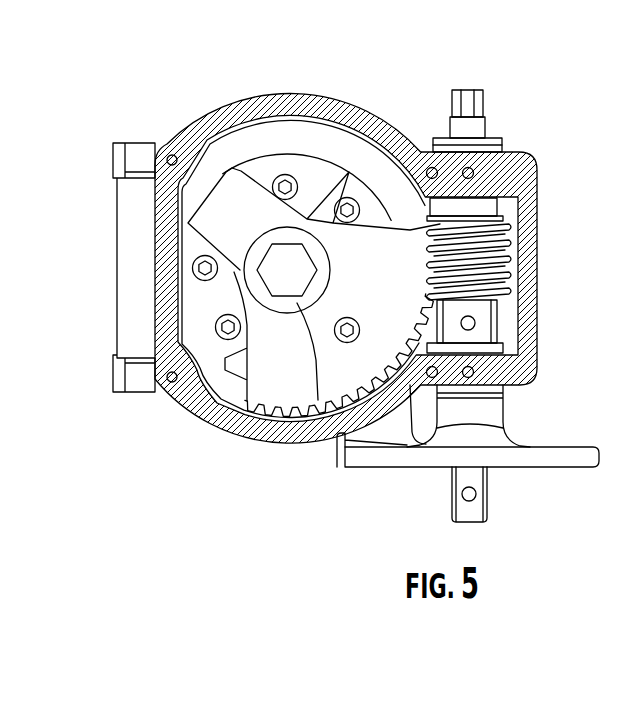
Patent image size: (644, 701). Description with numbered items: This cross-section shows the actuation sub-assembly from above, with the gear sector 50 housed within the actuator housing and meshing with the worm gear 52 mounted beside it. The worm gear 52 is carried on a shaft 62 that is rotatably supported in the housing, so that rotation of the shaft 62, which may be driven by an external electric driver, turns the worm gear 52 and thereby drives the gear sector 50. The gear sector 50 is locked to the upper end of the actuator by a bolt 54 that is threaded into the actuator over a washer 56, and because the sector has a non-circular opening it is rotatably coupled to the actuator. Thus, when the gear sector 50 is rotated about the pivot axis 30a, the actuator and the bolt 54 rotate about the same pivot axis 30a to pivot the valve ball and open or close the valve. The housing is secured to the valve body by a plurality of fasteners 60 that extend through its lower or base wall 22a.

The base wall 22a is at (212, 366).
The pivot axis 30a is at (291, 267).
The gear sector 50 is at (345, 240).
The worm gear 52 is at (522, 261).
The bolt 54 is at (268, 264).
The washer 56 is at (318, 382).
The fasteners 60 is at (203, 272).
The shaft 62 is at (492, 203).